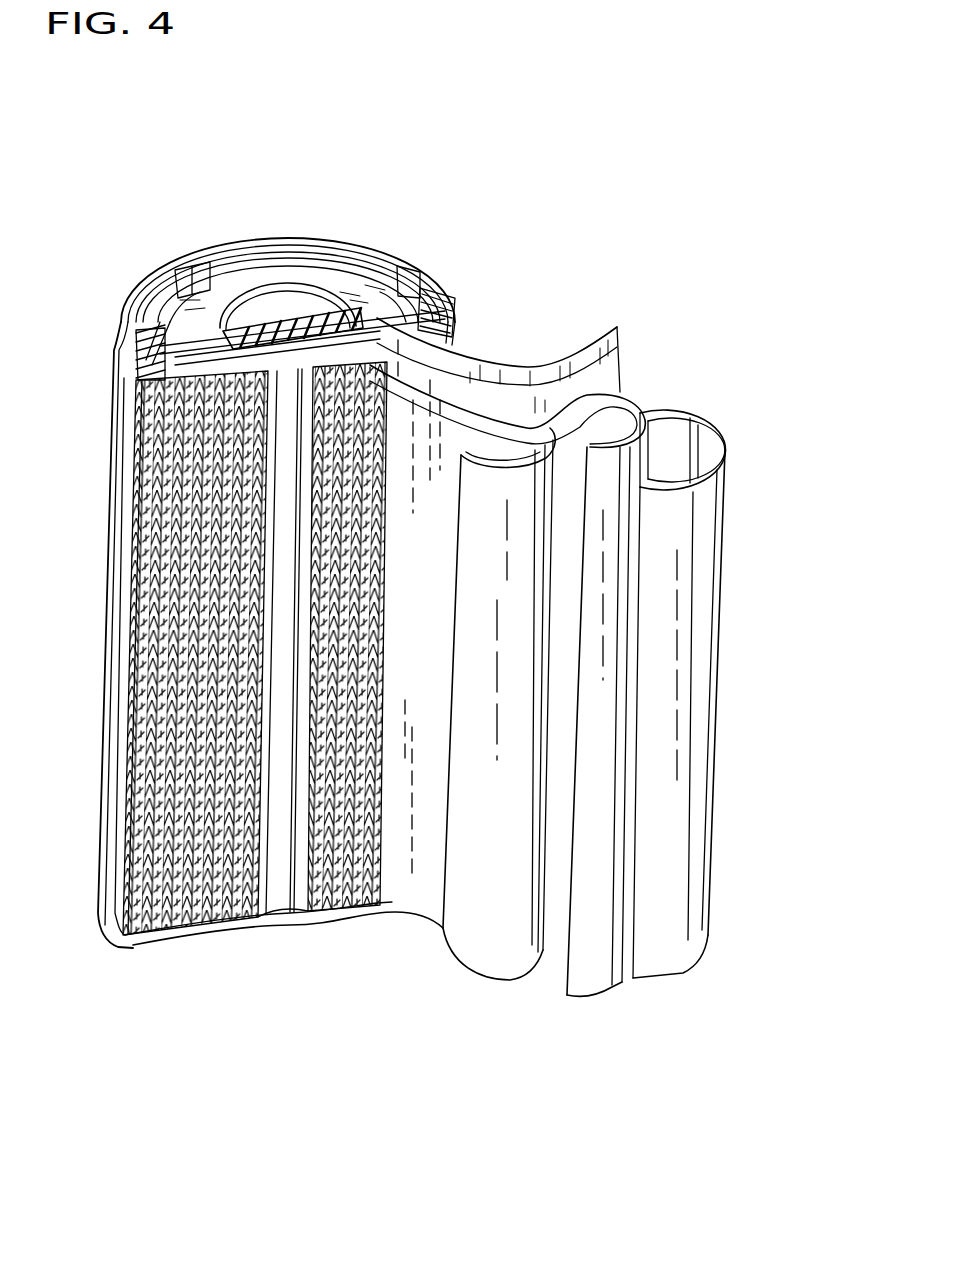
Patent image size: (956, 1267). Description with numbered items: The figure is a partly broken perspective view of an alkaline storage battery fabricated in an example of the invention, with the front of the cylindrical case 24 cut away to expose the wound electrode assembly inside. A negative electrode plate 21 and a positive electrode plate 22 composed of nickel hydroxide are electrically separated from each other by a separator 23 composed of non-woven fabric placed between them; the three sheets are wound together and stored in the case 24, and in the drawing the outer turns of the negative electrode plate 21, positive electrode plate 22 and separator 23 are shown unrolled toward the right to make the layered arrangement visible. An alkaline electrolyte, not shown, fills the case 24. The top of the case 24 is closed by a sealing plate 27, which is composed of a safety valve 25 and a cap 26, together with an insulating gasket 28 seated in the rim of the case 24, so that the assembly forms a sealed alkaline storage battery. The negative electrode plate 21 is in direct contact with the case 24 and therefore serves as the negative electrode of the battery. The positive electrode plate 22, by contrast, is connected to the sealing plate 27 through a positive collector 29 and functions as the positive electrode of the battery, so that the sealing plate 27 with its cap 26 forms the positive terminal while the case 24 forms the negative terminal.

The negative electrode plate 21 is at (667, 500).
The positive electrode plate 22 is at (487, 968).
The separator 23 is at (587, 983).
The case 24 is at (104, 940).
The safety valve 25 is at (287, 320).
The cap 26 is at (257, 294).
The sealing plate 27 is at (347, 287).
The insulating gasket 28 is at (447, 305).
The positive collector 29 is at (158, 286).